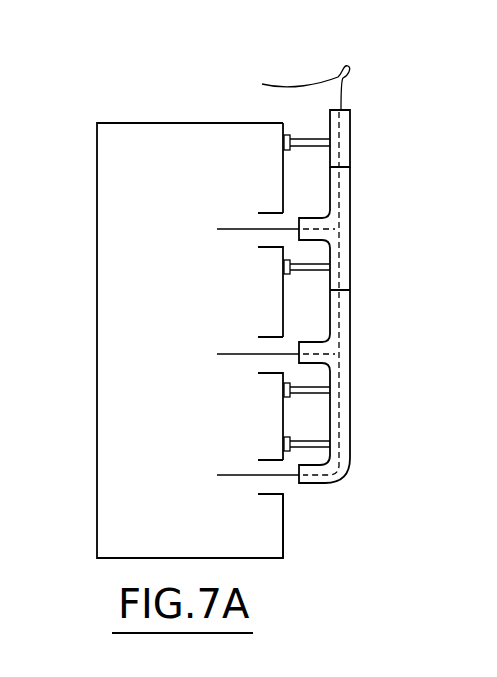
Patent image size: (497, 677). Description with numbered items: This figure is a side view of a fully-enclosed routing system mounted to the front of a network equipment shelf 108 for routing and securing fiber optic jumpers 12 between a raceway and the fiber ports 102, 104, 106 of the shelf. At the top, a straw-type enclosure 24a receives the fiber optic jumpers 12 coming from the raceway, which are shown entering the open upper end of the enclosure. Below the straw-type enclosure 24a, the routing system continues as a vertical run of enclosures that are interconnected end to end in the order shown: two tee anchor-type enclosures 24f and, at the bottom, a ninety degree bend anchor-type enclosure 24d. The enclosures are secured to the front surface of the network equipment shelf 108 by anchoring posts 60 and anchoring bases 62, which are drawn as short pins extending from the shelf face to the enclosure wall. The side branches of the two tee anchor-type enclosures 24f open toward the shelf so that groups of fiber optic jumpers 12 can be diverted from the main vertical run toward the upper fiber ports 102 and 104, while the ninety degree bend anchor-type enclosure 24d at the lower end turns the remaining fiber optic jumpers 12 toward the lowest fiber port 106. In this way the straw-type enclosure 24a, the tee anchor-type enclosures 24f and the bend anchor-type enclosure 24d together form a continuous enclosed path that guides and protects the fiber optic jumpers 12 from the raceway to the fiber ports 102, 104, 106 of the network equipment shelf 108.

The fiber optic jumpers 12 is at (293, 82).
The anchoring post 60 is at (292, 143).
The anchoring base 62 is at (295, 148).
The straw-type enclosure 24a is at (352, 140).
The tee anchor-type enclosure 24f is at (352, 222).
The 90° bend anchor-type enclosure 24d is at (352, 450).
The fiber port 102 is at (281, 253).
The fiber port 104 is at (281, 376).
The fiber port 106 is at (281, 500).
The network equipment shelf 108 is at (94, 163).